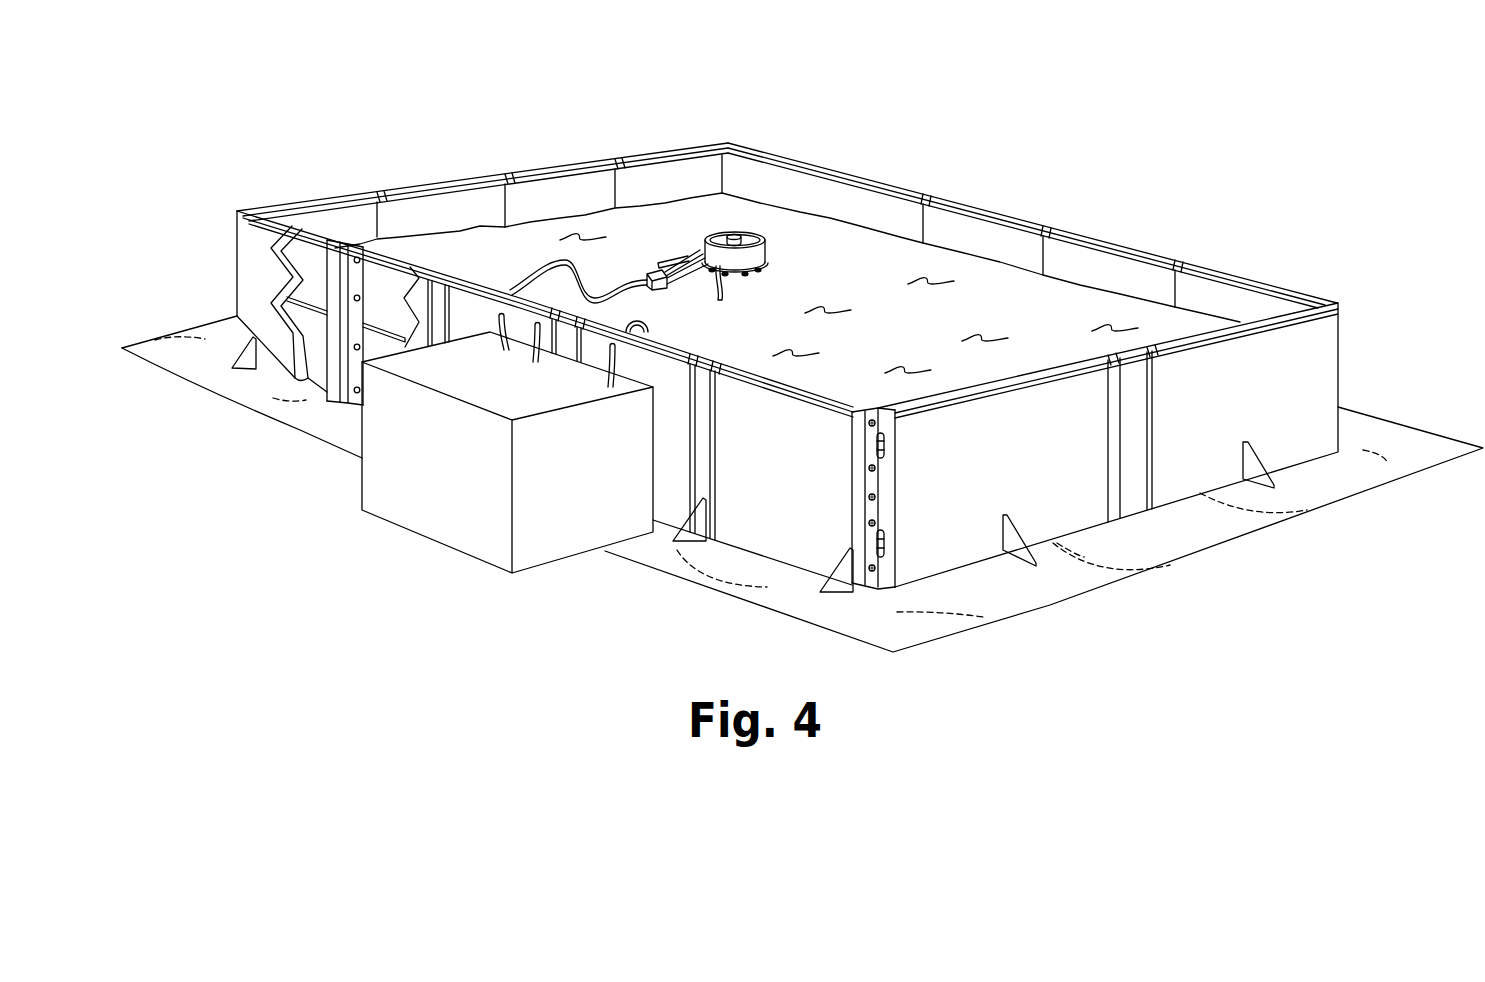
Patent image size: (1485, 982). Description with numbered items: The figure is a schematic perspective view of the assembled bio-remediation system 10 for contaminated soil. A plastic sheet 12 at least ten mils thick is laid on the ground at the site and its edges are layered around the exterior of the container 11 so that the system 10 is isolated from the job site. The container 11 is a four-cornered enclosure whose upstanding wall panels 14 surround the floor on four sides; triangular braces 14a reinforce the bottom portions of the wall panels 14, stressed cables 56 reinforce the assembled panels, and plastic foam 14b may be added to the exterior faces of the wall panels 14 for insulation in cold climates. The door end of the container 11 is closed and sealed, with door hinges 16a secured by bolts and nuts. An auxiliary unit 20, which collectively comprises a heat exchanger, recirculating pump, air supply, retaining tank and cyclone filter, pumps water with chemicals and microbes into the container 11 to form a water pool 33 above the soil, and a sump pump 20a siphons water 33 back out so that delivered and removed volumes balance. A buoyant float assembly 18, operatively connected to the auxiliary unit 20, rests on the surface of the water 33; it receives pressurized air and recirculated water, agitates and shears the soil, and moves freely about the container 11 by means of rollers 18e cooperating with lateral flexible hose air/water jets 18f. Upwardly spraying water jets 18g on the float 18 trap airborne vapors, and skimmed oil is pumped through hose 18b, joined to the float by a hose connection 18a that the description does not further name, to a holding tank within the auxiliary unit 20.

The bio-remediation system 10 is at (802, 361).
The container 11 is at (1243, 270).
The plastic sheet 12 is at (986, 598).
The wall panels 14 is at (431, 223).
The triangular braces 14a is at (228, 368).
The plastic foam 14b is at (201, 291).
The door hinges 16a is at (887, 455).
The buoyant float assembly 18 is at (751, 247).
The hose coupling 18a is at (631, 291).
The hose 18b is at (560, 262).
The rollers 18e is at (759, 274).
The flexible hose air/water jets 18f is at (683, 258).
The upwardly spraying water jets 18g is at (736, 230).
The auxiliary unit 20 is at (428, 478).
The sump pump 20a is at (652, 321).
The water pool 33 is at (885, 336).
The stressed cables 56 is at (381, 326).